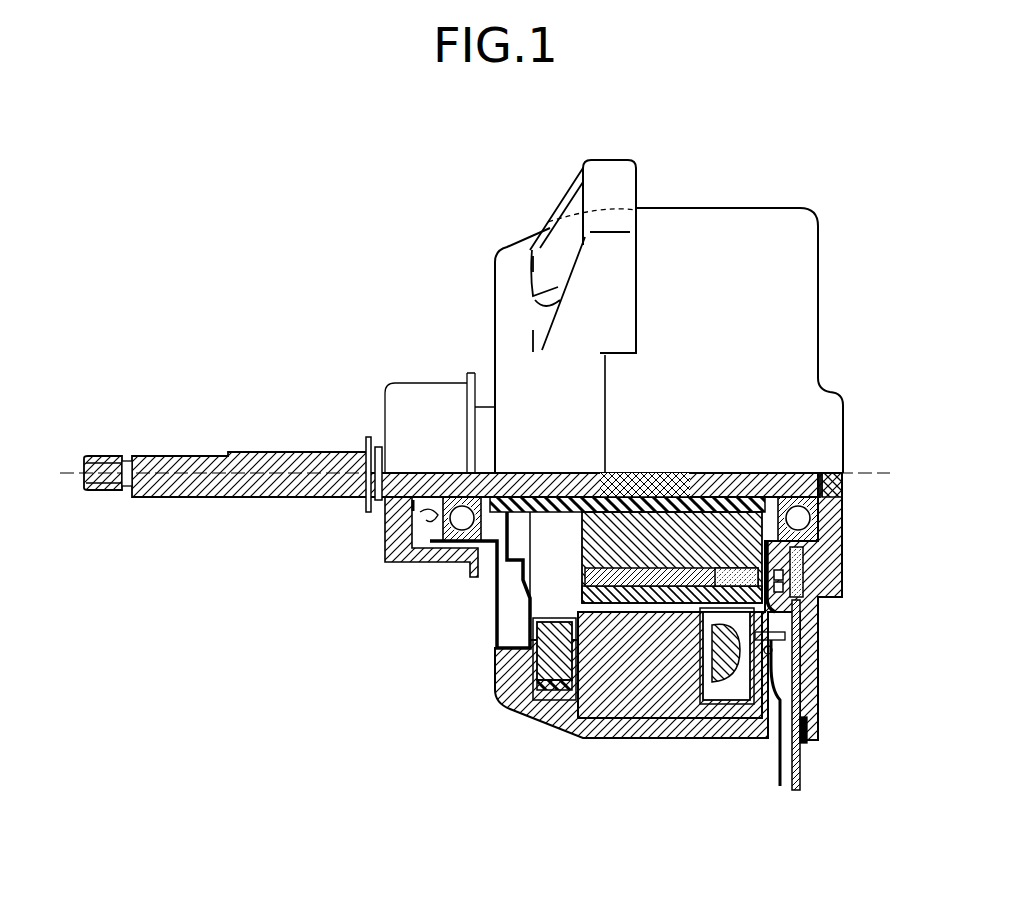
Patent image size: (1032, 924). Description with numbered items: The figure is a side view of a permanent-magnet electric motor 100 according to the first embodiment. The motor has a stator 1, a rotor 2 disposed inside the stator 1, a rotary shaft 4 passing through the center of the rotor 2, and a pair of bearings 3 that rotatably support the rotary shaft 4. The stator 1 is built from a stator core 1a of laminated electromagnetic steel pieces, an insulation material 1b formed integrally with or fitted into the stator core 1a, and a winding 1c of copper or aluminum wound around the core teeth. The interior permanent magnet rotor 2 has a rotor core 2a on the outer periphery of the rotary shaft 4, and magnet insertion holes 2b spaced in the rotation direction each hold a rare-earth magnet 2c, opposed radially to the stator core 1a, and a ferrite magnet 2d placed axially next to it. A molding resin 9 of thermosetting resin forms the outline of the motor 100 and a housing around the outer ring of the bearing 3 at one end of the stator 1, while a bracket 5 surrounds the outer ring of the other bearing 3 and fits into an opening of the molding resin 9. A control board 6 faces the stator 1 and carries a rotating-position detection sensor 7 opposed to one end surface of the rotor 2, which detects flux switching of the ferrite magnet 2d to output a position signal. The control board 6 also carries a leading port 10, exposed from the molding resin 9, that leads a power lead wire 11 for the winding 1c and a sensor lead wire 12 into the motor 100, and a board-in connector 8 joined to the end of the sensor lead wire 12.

The electric motor 100 is at (517, 136).
The stator 1 is at (423, 677).
The stator core 1a is at (570, 702).
The insulation material 1b is at (545, 698).
The winding 1c is at (538, 683).
The rotor 2 is at (750, 805).
The rotor core 2a is at (604, 604).
The magnet insertion holes 2b is at (641, 590).
The rare-earth magnet 2c is at (681, 576).
The ferrite magnet 2d is at (727, 578).
The bearings 3 is at (430, 543).
The rotary shaft 4 is at (258, 452).
The bracket 5 is at (413, 511).
The control board 6 is at (782, 577).
The rotating-position detection sensor 7 is at (779, 589).
The board-in connector 8 is at (800, 560).
The molding resin 9 is at (572, 741).
The leading port 10 is at (806, 741).
The power lead wire 11 is at (777, 772).
The sensor lead wire 12 is at (797, 781).